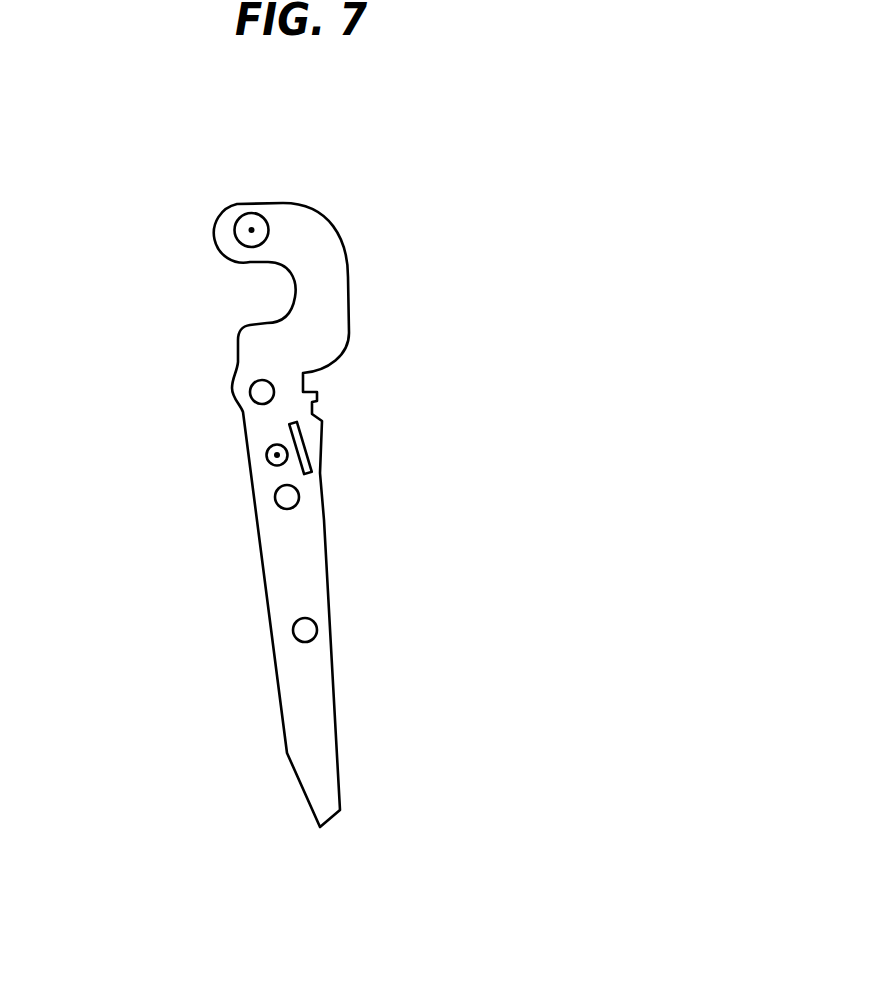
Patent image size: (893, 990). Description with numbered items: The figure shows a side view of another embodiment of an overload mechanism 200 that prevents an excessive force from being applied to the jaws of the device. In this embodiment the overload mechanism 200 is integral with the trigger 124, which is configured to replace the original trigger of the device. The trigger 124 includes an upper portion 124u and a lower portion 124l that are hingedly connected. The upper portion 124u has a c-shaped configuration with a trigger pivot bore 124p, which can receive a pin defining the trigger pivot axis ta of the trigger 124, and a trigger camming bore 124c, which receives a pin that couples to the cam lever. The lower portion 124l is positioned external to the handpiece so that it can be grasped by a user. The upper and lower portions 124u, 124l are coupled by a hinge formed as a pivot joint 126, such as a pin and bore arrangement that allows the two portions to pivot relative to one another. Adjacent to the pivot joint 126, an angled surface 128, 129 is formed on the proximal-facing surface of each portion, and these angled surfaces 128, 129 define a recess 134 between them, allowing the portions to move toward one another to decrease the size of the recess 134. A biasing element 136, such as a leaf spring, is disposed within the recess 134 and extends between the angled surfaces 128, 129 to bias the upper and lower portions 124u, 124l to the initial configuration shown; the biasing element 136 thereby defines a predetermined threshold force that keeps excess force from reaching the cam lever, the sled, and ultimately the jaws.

The trigger 124 is at (414, 245).
The trigger pivot bore 124p is at (269, 220).
The trigger pivot axis ta is at (251, 229).
The upper portion 124u is at (177, 208).
The lower portion 124l is at (262, 823).
The trigger camming bore 124c is at (270, 381).
The pivot joint 126 is at (266, 455).
The angled surface 128 is at (316, 432).
The recess 134 is at (317, 433).
The biasing element 136 is at (288, 454).
The angled surface 129 is at (320, 470).
The overload mechanism 200 is at (366, 437).